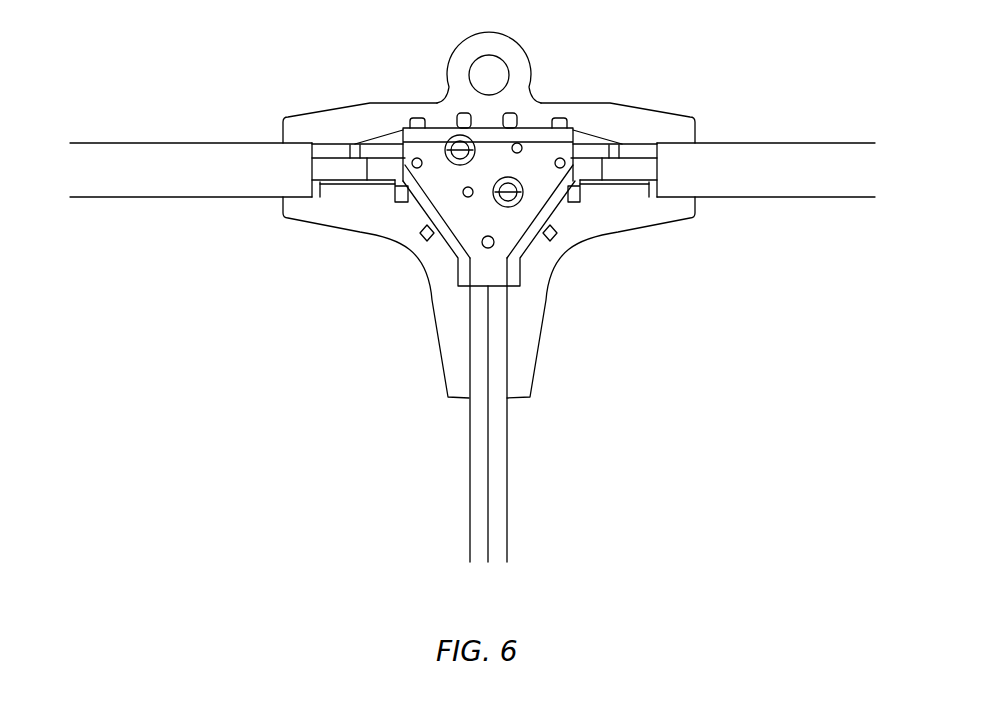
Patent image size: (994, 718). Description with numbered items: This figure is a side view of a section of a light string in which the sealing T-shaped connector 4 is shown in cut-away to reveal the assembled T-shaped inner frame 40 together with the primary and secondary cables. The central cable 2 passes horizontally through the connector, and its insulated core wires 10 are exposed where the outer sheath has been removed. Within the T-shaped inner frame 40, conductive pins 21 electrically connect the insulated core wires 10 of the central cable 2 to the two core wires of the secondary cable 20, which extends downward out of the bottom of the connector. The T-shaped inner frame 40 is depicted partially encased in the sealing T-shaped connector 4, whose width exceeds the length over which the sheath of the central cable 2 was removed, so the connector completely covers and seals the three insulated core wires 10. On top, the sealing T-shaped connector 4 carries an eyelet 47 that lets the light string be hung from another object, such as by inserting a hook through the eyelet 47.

The central cable 2 is at (218, 157).
The sealing T-shaped connector 4 is at (558, 260).
The insulated core wires 10 is at (330, 167).
The secondary cable 20 is at (500, 315).
The conductive pins 21 is at (460, 147).
The T-shaped inner frame 40 is at (462, 260).
The eyelet 47 is at (462, 53).